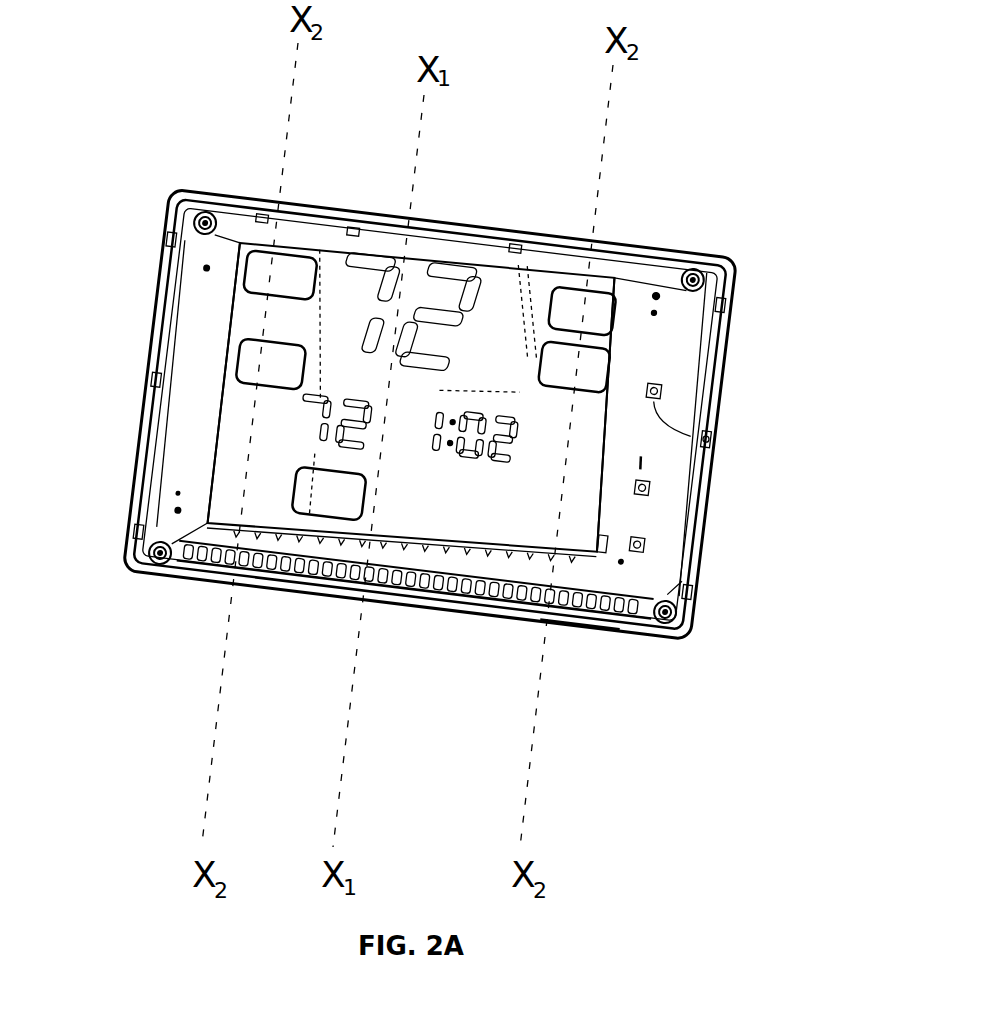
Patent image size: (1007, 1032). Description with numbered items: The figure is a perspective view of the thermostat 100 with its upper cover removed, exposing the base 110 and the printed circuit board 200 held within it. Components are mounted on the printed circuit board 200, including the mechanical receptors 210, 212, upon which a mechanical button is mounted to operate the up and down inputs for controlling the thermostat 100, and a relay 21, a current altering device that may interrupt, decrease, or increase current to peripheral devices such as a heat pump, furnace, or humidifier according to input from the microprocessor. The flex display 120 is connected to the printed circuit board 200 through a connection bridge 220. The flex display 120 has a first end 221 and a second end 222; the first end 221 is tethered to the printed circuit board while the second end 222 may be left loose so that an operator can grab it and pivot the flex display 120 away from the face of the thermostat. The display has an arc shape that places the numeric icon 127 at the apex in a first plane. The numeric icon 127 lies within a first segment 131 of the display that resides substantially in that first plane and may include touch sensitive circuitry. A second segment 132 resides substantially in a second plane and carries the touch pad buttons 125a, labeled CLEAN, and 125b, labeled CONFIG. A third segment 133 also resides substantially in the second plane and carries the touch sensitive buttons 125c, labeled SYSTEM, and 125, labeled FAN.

The thermostat 100 is at (296, 630).
The base 110 is at (627, 633).
The flex display 120 is at (523, 290).
The touch sensitive button 125 is at (233, 370).
The touch pad button 125a is at (597, 303).
The touch pad button 125b is at (618, 348).
The touch sensitive button 125c is at (240, 252).
The numeric icon 127 is at (392, 258).
The first segment 131 is at (495, 288).
The second segment 132 is at (644, 290).
The third segment 133 is at (233, 313).
The printed circuit board 200 is at (672, 250).
The mechanical receptor 210 is at (708, 441).
The mechanical receptor 212 is at (654, 492).
The connection bridge 220 is at (582, 627).
The first end 221 is at (614, 381).
The second end 222 is at (213, 463).
The relay 21 is at (492, 598).